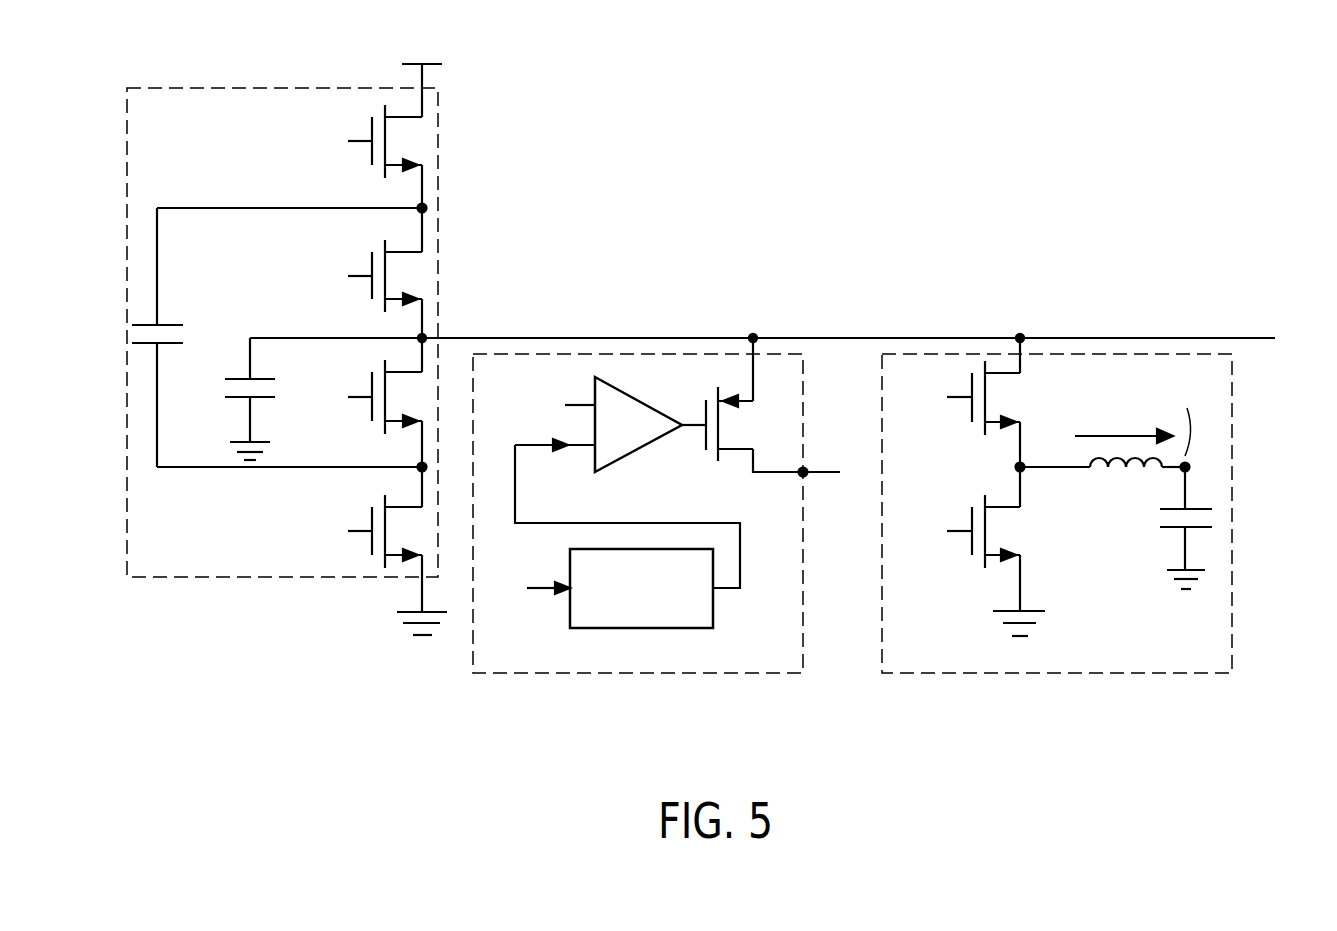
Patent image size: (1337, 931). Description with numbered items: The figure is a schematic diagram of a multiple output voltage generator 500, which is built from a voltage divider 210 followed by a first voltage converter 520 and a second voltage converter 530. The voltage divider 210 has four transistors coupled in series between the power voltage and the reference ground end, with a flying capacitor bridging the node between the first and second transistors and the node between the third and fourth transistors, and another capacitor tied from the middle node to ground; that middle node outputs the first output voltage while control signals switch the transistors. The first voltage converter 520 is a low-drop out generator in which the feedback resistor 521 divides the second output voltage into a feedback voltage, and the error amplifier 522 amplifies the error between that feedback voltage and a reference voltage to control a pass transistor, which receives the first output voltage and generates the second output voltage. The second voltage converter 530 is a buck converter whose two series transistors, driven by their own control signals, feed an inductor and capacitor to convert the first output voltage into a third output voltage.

The multiple output voltage generator 500 is at (1308, 718).
The voltage divider 210 is at (240, 88).
The first voltage converter 520 is at (682, 677).
The feedback resistor 521 is at (713, 605).
The error amplifier 522 is at (640, 397).
The second voltage converter 530 is at (1115, 675).